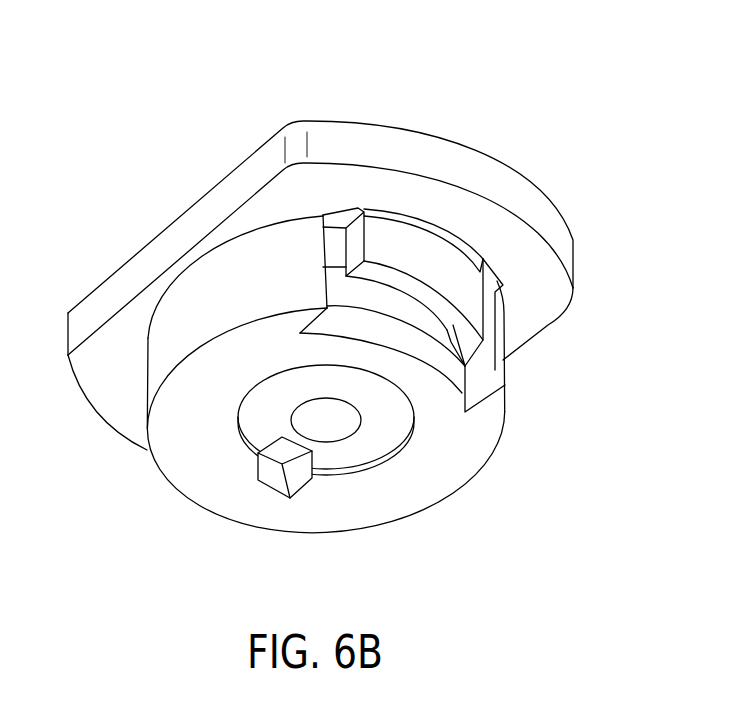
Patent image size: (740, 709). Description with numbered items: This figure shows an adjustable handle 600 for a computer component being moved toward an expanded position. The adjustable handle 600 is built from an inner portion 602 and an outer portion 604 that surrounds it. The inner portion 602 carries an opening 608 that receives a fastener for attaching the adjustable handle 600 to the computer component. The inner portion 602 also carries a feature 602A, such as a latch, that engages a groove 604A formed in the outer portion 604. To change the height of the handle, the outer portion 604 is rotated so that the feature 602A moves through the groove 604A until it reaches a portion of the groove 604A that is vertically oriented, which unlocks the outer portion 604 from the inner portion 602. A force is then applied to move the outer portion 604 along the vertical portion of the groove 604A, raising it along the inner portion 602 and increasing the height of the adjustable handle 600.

The adjustable handle 600 is at (127, 81).
The inner portion 602 is at (373, 428).
The feature 602A is at (333, 257).
The outer portion 604 is at (522, 198).
The groove 604A is at (457, 317).
The opening 608 is at (323, 427).